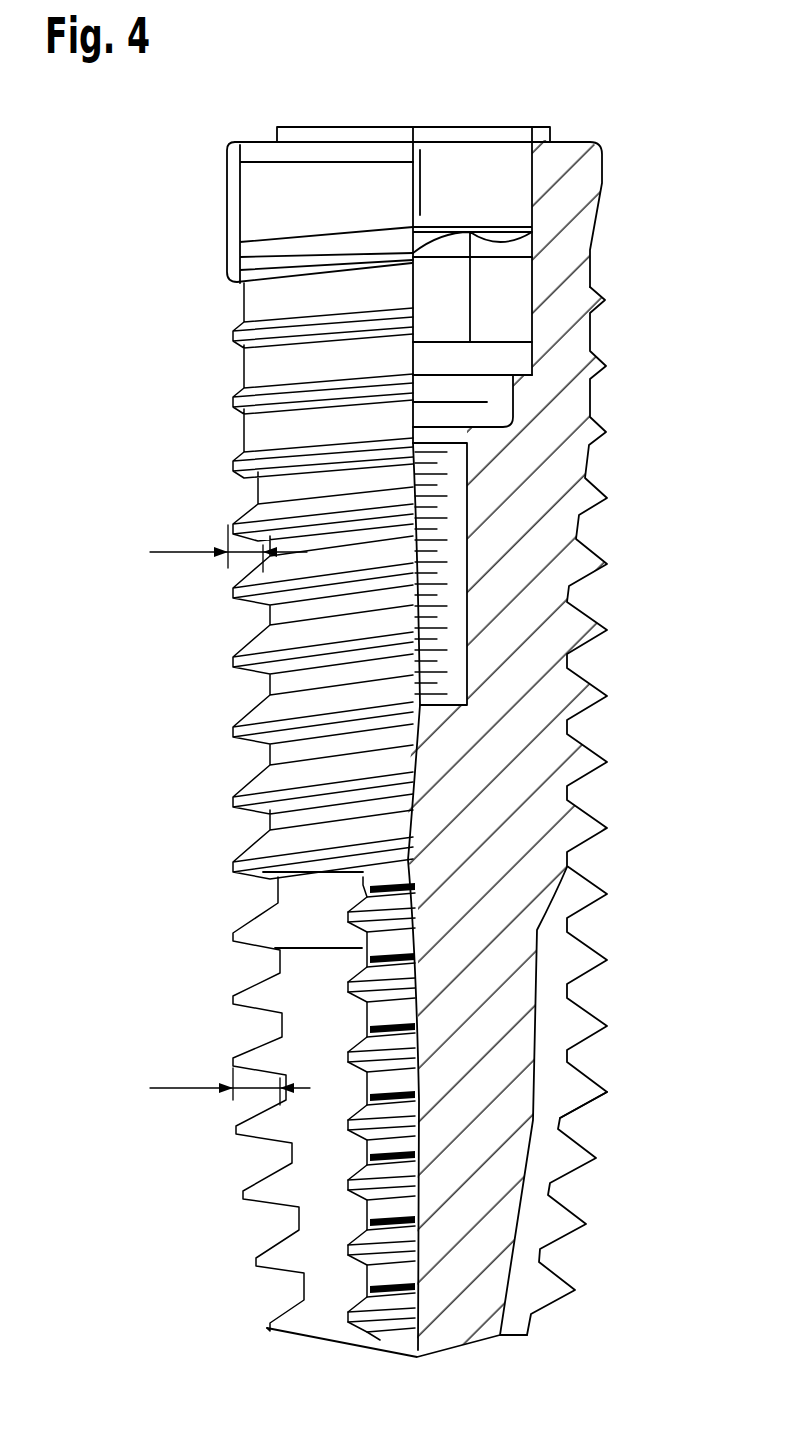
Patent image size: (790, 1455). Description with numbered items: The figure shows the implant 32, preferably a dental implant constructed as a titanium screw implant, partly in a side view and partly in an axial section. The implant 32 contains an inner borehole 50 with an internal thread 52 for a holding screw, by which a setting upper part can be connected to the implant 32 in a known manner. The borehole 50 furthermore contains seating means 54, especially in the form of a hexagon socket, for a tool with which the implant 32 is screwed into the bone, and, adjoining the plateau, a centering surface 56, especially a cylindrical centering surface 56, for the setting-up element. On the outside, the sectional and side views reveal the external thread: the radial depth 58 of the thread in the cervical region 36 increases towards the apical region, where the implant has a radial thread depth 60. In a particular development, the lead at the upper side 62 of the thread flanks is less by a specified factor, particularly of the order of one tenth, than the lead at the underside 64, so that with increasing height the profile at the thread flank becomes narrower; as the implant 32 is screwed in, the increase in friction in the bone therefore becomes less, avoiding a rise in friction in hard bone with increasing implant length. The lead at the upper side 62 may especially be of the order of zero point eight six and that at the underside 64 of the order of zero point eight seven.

The implant 32 is at (273, 141).
The inner borehole 50 is at (459, 125).
The centering surface 56 is at (510, 176).
The seating means 54 is at (510, 322).
The cervical region 36 is at (239, 425).
The radial depth of the thread 58 is at (175, 550).
The internal thread 52 is at (455, 606).
The radial thread depth 60 is at (180, 1086).
The upper side of the thread flanks 62 is at (594, 1075).
The underside of the thread flanks 64 is at (594, 1108).